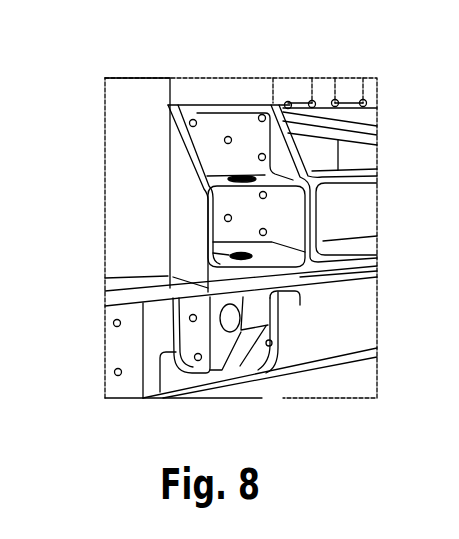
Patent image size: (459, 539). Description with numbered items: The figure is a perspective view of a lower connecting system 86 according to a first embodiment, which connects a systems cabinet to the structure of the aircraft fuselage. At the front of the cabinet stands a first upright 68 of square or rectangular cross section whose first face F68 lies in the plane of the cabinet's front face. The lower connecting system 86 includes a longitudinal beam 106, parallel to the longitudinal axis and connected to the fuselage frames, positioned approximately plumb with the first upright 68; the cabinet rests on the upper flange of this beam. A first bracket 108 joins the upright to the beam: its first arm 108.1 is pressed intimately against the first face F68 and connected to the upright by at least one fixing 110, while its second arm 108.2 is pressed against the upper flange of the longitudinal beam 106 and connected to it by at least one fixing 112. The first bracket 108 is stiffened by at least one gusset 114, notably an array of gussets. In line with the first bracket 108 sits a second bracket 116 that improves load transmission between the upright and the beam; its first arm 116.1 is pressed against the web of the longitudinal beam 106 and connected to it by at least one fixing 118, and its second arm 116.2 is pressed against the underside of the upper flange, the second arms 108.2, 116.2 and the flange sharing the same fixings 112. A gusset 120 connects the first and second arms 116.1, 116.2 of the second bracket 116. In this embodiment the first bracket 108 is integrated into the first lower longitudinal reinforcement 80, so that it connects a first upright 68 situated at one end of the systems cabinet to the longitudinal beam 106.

The first vertical upright 68 is at (141, 102).
The first face F68 is at (218, 92).
The first lower longitudinal reinforcement 80 is at (356, 214).
The lower connecting system 86 is at (155, 213).
The longitudinal beam 106 is at (340, 340).
The first bracket 108 is at (180, 172).
The first arm 108.1 is at (209, 105).
The second arm 108.2 is at (140, 290).
The fixing 110 is at (224, 141).
The fixing 112 is at (208, 288).
The gusset 114 is at (274, 220).
The second bracket 116 is at (208, 370).
The first arm 116.1 is at (161, 393).
The second arm 116.2 is at (300, 306).
The fixing 118 is at (193, 356).
The gusset 120 is at (247, 345).